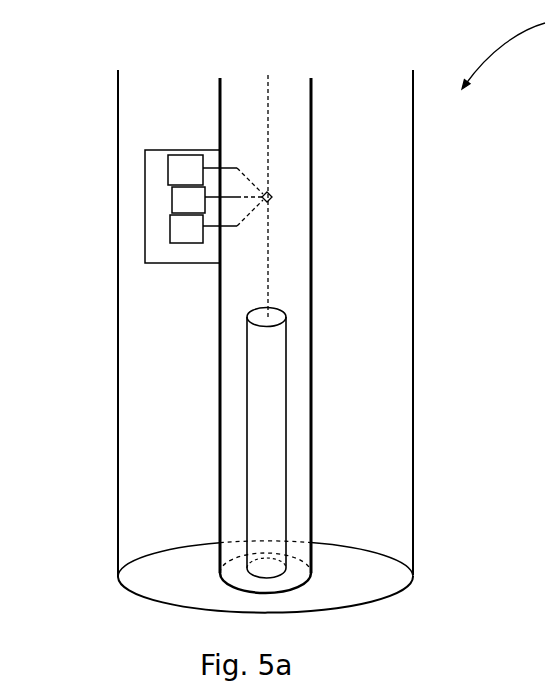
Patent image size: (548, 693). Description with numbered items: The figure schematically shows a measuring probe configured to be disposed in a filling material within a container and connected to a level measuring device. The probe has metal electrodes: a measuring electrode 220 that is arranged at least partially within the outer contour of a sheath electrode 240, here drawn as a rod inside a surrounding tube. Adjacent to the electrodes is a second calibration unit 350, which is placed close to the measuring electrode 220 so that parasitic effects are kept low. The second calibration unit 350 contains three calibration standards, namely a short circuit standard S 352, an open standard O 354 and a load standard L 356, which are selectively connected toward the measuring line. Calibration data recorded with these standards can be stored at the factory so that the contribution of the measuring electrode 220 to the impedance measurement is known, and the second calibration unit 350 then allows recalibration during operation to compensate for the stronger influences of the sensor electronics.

The measuring electrode 220 is at (275, 400).
The sheath electrode 240 is at (153, 460).
The second calibration unit 350 is at (152, 177).
The short circuit standard S 352 is at (168, 168).
The open standard O 354 is at (172, 198).
The load standard L 356 is at (170, 230).